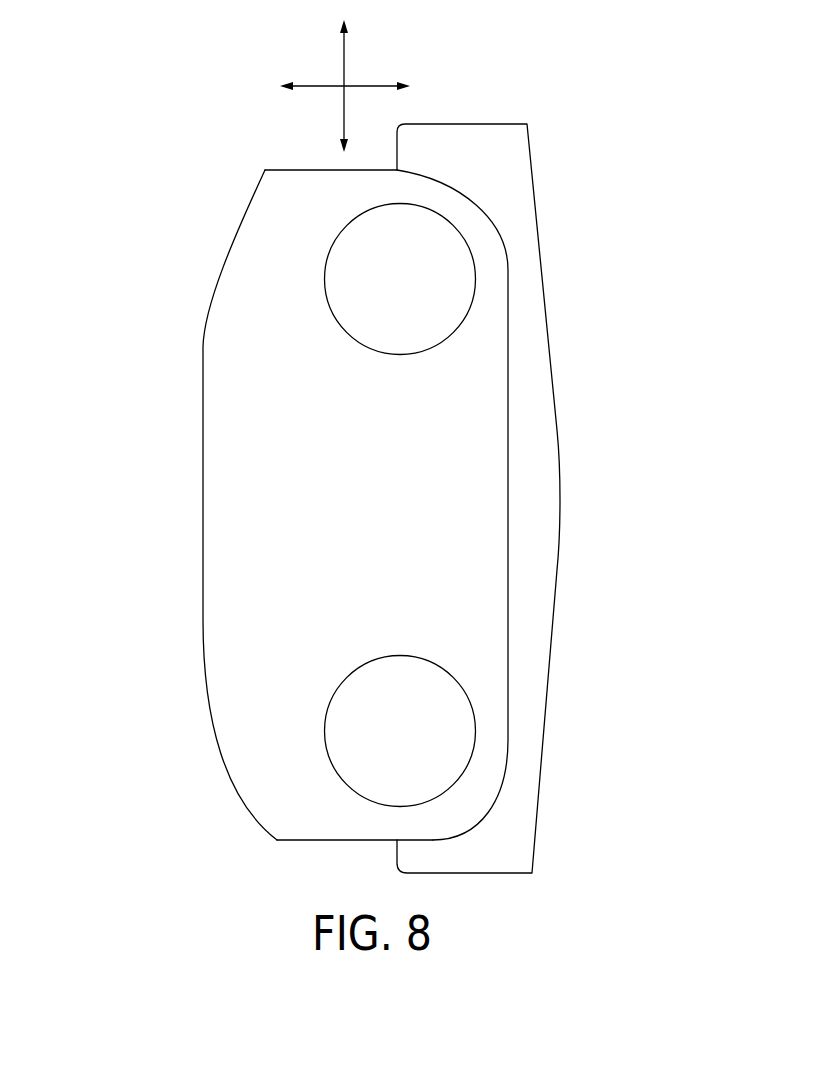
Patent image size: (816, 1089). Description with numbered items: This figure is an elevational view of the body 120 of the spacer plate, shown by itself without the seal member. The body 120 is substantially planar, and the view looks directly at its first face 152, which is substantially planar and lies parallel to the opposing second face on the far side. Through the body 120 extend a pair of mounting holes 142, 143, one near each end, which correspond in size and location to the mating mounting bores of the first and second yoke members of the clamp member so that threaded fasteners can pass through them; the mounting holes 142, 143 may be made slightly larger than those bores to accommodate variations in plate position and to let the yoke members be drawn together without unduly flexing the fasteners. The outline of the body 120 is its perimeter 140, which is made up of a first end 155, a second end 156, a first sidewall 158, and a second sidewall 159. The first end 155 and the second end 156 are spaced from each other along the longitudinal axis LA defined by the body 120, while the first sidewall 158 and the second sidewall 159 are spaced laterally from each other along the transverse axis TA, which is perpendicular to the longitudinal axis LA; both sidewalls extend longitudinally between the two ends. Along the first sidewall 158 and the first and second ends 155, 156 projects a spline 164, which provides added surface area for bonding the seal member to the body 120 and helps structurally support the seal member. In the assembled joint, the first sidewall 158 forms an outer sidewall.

The body 120 is at (152, 101).
The perimeter 140 is at (203, 500).
The mounting hole 142 is at (328, 308).
The mounting hole 143 is at (335, 692).
The first face 152 is at (392, 487).
The first end 155 is at (300, 168).
The second end 156 is at (338, 842).
The first sidewall 158 is at (508, 507).
The second sidewall 159 is at (203, 448).
The spline 164 is at (520, 233).
The transverse axis TA is at (318, 84).
The longitudinal axis LA is at (345, 60).